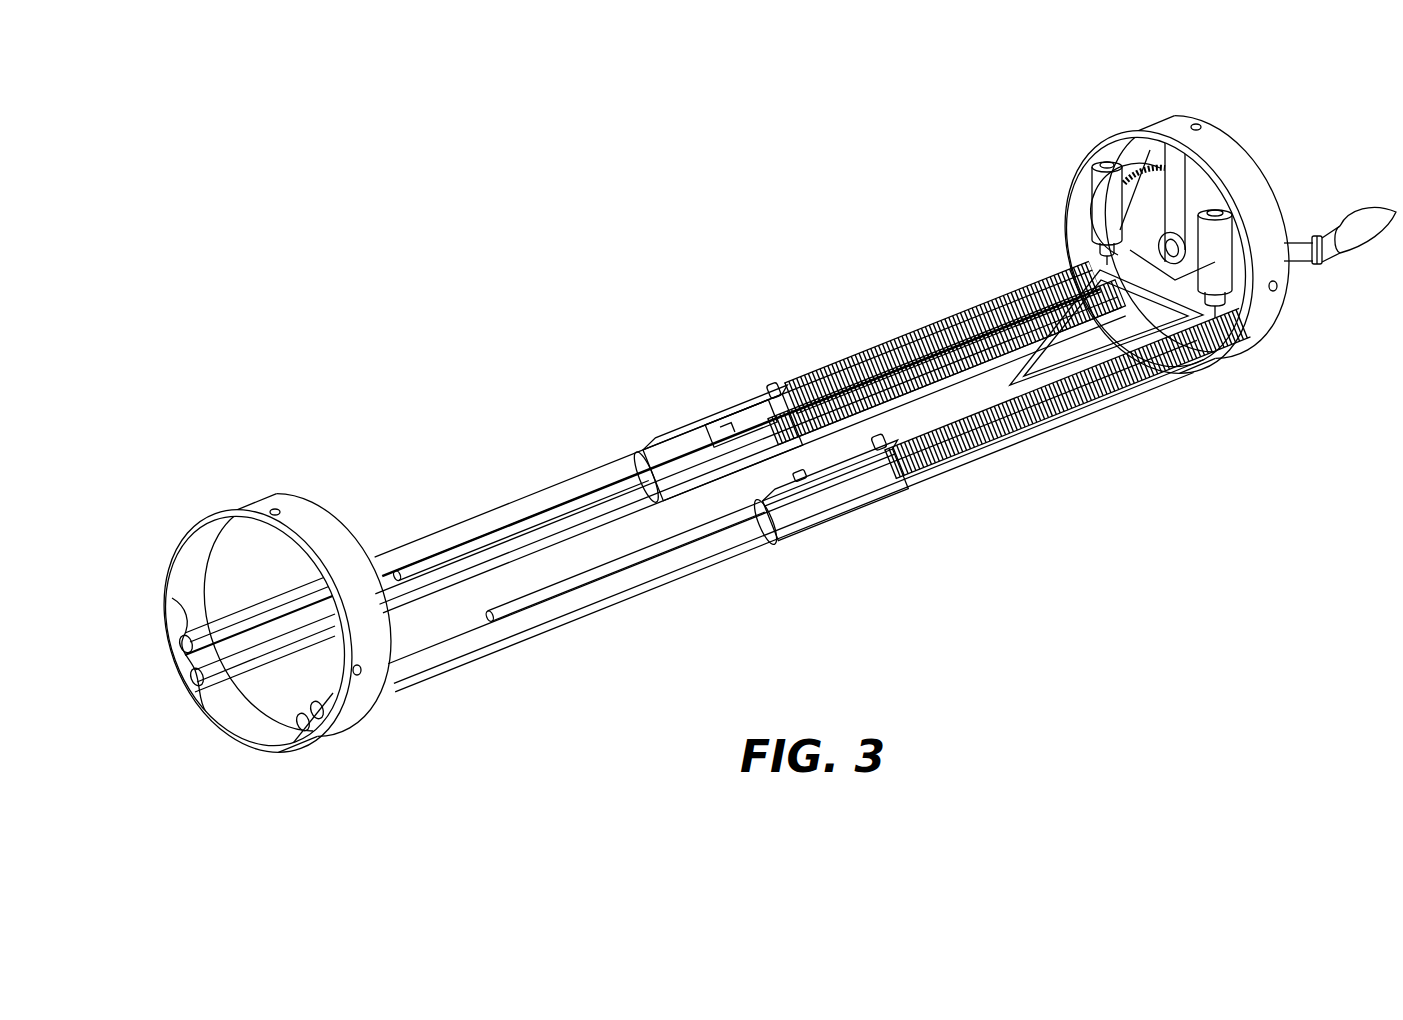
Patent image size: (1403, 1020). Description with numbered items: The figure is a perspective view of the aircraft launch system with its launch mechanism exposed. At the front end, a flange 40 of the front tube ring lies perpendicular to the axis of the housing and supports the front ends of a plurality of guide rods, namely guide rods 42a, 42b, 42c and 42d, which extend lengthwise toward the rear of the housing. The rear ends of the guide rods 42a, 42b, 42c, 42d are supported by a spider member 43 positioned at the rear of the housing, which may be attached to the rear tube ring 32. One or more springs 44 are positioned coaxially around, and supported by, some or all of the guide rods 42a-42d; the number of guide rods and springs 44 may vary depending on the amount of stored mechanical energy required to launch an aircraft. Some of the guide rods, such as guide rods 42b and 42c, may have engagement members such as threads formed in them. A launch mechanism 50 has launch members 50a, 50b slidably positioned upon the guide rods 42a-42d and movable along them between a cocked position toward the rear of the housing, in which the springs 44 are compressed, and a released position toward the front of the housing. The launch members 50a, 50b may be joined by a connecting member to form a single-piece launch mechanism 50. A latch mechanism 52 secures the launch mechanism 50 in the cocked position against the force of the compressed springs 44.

The rear tube ring 32 is at (1213, 128).
The flange 40 is at (188, 700).
The guide rod 42a is at (413, 690).
The guide rod 42b is at (460, 650).
The guide rod 42c is at (291, 592).
The guide rod 42d is at (268, 643).
The spider member 43 is at (1173, 193).
The spring 44 is at (993, 290).
The launch mechanism 50 is at (690, 364).
The launch member 50a is at (680, 428).
The launch member 50b is at (875, 500).
The latch mechanism 52 is at (830, 440).